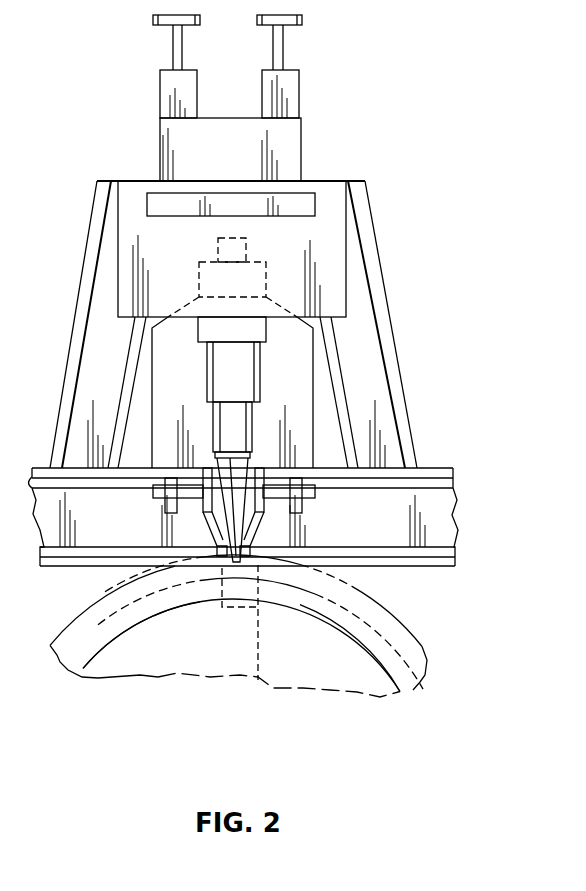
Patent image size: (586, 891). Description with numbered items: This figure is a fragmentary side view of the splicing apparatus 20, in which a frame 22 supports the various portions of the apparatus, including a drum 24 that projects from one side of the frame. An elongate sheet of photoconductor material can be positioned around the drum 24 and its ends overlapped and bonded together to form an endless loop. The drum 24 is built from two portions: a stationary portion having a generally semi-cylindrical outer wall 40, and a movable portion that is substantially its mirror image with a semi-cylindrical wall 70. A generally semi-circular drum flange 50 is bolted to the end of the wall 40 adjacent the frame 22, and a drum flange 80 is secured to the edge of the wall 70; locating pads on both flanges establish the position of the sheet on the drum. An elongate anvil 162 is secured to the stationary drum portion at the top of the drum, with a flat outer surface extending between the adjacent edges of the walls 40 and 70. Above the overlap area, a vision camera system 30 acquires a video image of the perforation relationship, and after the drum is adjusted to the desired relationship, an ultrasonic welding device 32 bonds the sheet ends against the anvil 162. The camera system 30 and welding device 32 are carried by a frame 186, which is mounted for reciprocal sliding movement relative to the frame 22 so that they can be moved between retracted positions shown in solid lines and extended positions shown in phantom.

The apparatus 20 is at (466, 413).
The frame 22 is at (447, 520).
The drum 24 is at (378, 703).
The vision camera system 30 is at (212, 527).
The ultrasonic welding device 32 is at (257, 535).
The semi-cylindrical outer wall 40 is at (103, 638).
The drum flange 50 is at (72, 628).
The semi-cylindrical wall 70 is at (372, 645).
The drum flange 80 is at (408, 628).
The anvil 162 is at (223, 608).
The frame 186 is at (393, 348).